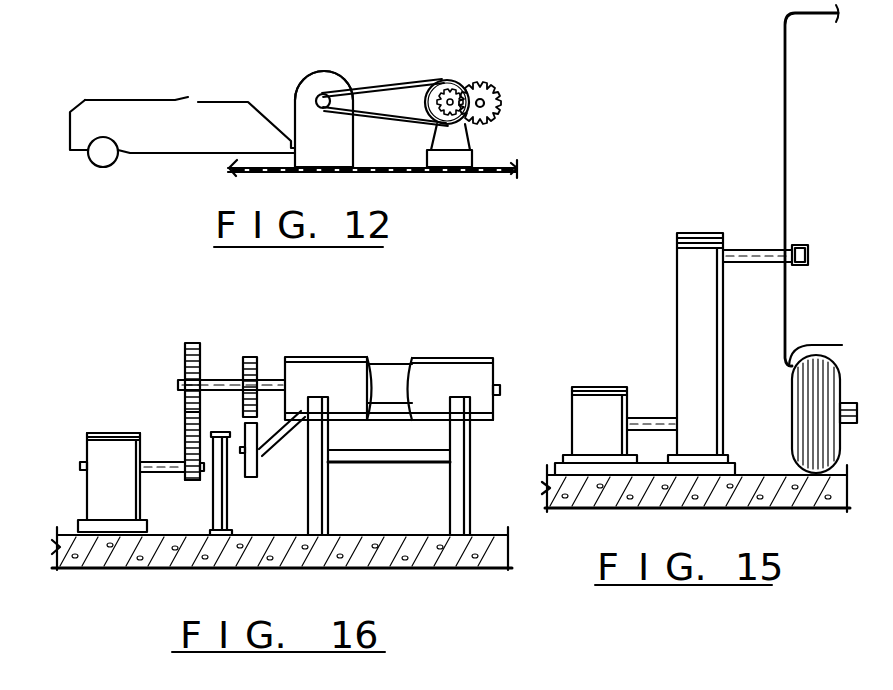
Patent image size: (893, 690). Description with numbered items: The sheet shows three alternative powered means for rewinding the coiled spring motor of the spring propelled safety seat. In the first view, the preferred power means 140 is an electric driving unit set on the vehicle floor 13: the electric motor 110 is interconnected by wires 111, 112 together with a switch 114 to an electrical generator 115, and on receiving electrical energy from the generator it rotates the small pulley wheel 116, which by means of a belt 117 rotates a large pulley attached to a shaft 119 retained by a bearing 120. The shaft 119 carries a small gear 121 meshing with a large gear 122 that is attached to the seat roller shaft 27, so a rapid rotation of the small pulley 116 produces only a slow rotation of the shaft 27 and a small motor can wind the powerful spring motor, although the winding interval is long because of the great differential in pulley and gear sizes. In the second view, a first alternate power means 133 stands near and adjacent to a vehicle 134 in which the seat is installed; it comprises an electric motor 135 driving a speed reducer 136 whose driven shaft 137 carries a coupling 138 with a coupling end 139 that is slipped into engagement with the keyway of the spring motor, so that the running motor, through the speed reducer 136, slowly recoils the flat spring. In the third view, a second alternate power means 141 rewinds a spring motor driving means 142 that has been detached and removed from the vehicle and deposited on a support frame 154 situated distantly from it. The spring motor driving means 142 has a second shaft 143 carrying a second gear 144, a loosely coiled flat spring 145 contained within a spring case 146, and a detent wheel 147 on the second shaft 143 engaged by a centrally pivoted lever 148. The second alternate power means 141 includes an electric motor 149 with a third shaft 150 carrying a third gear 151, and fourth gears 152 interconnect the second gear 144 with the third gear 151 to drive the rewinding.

In FIG. 12, the vehicle floor 13 is at (403, 173).
In FIG. 12, the seat roller shaft 27 is at (502, 104).
In FIG. 12, the electric motor 110 is at (296, 92).
In FIG. 12, the wire 111 is at (213, 101).
In FIG. 12, the wire 112 is at (126, 100).
In FIG. 12, the switch 114 is at (177, 98).
In FIG. 12, the electrical generator 115 is at (96, 166).
In FIG. 12, the small pulley wheel 116 is at (327, 95).
In FIG. 12, the belt 117 is at (400, 85).
In FIG. 12, the shaft 119 is at (443, 82).
In FIG. 12, the bearing 120 is at (434, 134).
In FIG. 12, the small gear 121 is at (418, 100).
In FIG. 12, the large gear 122 is at (500, 91).
In FIG. 15, the first alternate power means 133 is at (625, 386).
In FIG. 15, the vehicle 134 is at (785, 120).
In FIG. 15, the electric motor 135 is at (640, 345).
In FIG. 15, the speed reducer 136 is at (677, 298).
In FIG. 15, the driven shaft 137 is at (745, 250).
In FIG. 15, the coupling 138 is at (800, 265).
In FIG. 15, the coupling end 139 is at (829, 219).
In FIG. 12, the power means 140 is at (318, 70).
In FIG. 16, the second alternate power means 141 is at (93, 432).
In FIG. 16, the spring motor driving means 142 is at (443, 358).
In FIG. 16, the second shaft 143 is at (210, 380).
In FIG. 16, the second gear 144 is at (186, 357).
In FIG. 16, the loosely coiled flat spring 145 is at (384, 360).
In FIG. 16, the spring case 146 is at (421, 357).
In FIG. 16, the detent wheel 147 is at (258, 357).
In FIG. 16, the centrally pivoted lever 148 is at (256, 472).
In FIG. 16, the electric motor 149 is at (110, 432).
In FIG. 16, the third shaft 150 is at (157, 475).
In FIG. 16, the third gear 151 is at (183, 483).
In FIG. 16, the fourth gears 152 is at (185, 443).
In FIG. 16, the support frame 154 is at (328, 515).